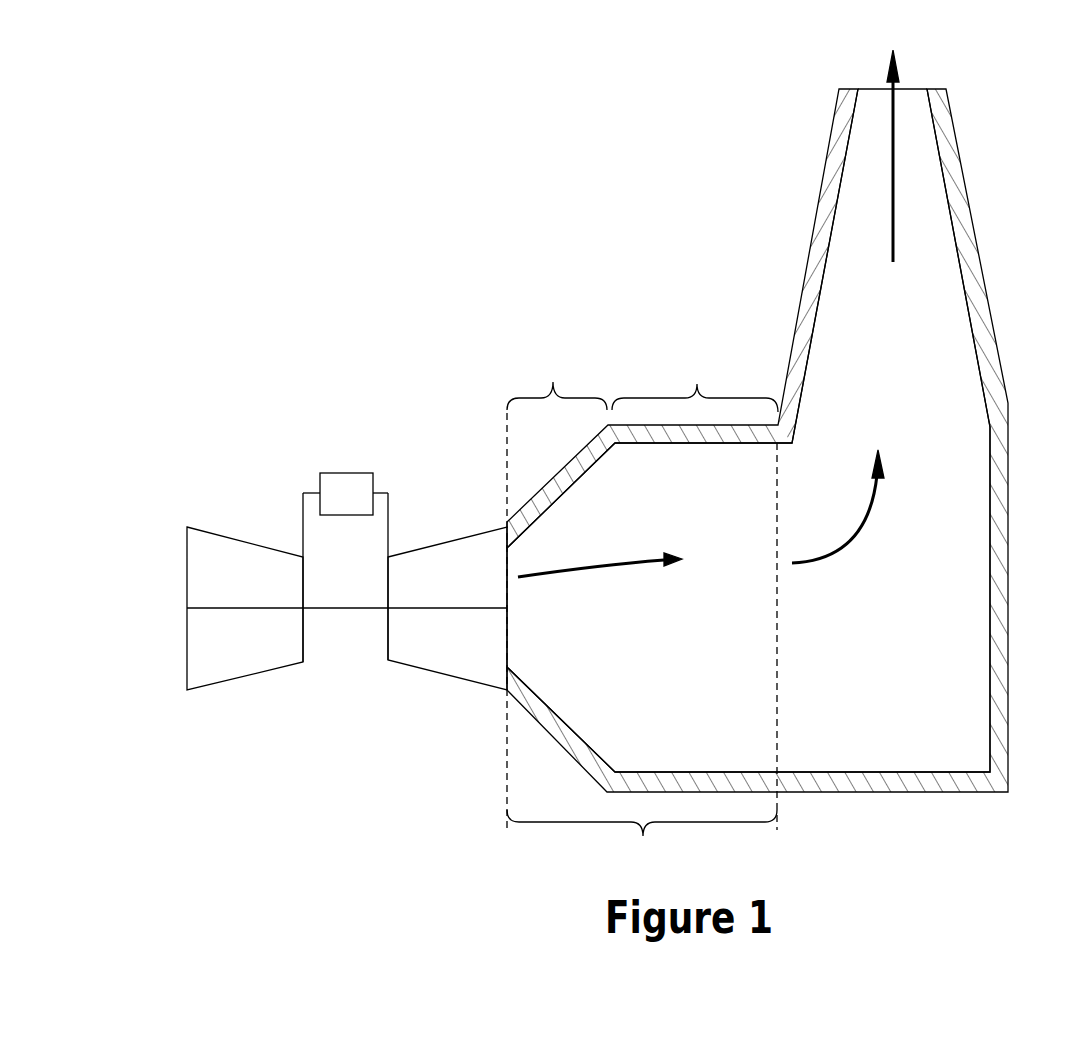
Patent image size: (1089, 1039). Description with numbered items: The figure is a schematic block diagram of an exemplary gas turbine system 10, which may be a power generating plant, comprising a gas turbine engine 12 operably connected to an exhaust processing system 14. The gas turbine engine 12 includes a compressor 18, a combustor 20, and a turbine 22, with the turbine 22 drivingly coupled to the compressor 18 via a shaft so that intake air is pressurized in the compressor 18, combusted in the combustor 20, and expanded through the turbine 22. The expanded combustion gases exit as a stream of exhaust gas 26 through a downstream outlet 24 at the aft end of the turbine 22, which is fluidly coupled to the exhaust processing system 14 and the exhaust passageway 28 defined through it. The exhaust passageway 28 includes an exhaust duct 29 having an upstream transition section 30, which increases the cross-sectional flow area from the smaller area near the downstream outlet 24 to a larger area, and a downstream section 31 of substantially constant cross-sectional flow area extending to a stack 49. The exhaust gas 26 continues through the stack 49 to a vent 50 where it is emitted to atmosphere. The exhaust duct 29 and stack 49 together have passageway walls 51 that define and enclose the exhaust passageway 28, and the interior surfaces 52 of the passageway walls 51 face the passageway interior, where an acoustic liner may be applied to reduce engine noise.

The gas turbine system 10 is at (420, 262).
The gas turbine engine 12 is at (258, 455).
The exhaust processing system 14 is at (738, 258).
The compressor 18 is at (220, 591).
The combustor 20 is at (361, 507).
The turbine 22 is at (431, 591).
The downstream outlet 24 is at (507, 633).
The exhaust gas 26 is at (600, 563).
The exhaust passageway 28 is at (655, 631).
The exhaust duct 29 is at (642, 841).
The transition section 30 is at (557, 382).
The downstream section 31 is at (695, 384).
The stack 49 is at (875, 321).
The vent 50 is at (908, 89).
The passageway walls 51 is at (822, 232).
The interior surfaces 52 is at (590, 470).